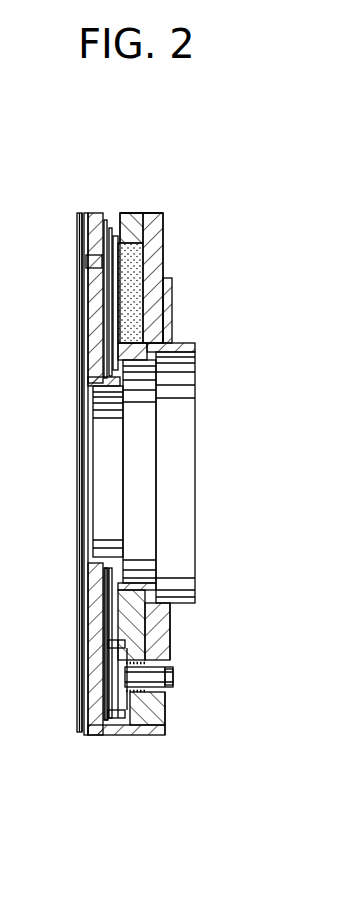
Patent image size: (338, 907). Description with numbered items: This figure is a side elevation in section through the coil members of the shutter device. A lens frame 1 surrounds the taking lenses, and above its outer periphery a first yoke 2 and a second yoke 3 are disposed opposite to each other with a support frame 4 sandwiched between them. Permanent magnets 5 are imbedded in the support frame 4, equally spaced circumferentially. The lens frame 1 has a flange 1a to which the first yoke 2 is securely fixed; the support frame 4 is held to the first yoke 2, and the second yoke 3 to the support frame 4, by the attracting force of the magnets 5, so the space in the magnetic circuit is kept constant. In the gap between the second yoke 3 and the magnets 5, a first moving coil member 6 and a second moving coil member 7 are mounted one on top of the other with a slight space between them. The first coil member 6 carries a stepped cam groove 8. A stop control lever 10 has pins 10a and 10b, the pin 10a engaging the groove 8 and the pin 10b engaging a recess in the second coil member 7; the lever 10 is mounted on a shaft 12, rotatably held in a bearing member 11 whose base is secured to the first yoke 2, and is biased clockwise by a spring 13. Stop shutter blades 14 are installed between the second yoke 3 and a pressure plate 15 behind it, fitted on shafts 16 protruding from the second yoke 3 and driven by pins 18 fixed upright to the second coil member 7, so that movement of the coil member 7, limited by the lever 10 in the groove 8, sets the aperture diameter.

The lens frame 1 is at (180, 345).
The flange 1a is at (172, 290).
The first yoke 2 is at (163, 232).
The second yoke 3 is at (96, 331).
The support frame 4 is at (137, 213).
The permanent magnets 5 is at (140, 267).
The first moving coil member 6 is at (115, 236).
The second moving coil member 7 is at (106, 218).
The cam groove 8 is at (106, 662).
The stop control lever 10 is at (125, 720).
The pin 10a is at (108, 643).
The pin 10b is at (108, 713).
The bearing member 11 is at (168, 667).
The shaft 12 is at (173, 680).
The spring 13 is at (152, 663).
The stop shutter blades 14 is at (81, 298).
The pressure plate 15 is at (79, 375).
The shafts 16 is at (84, 237).
The pins 18 is at (92, 262).